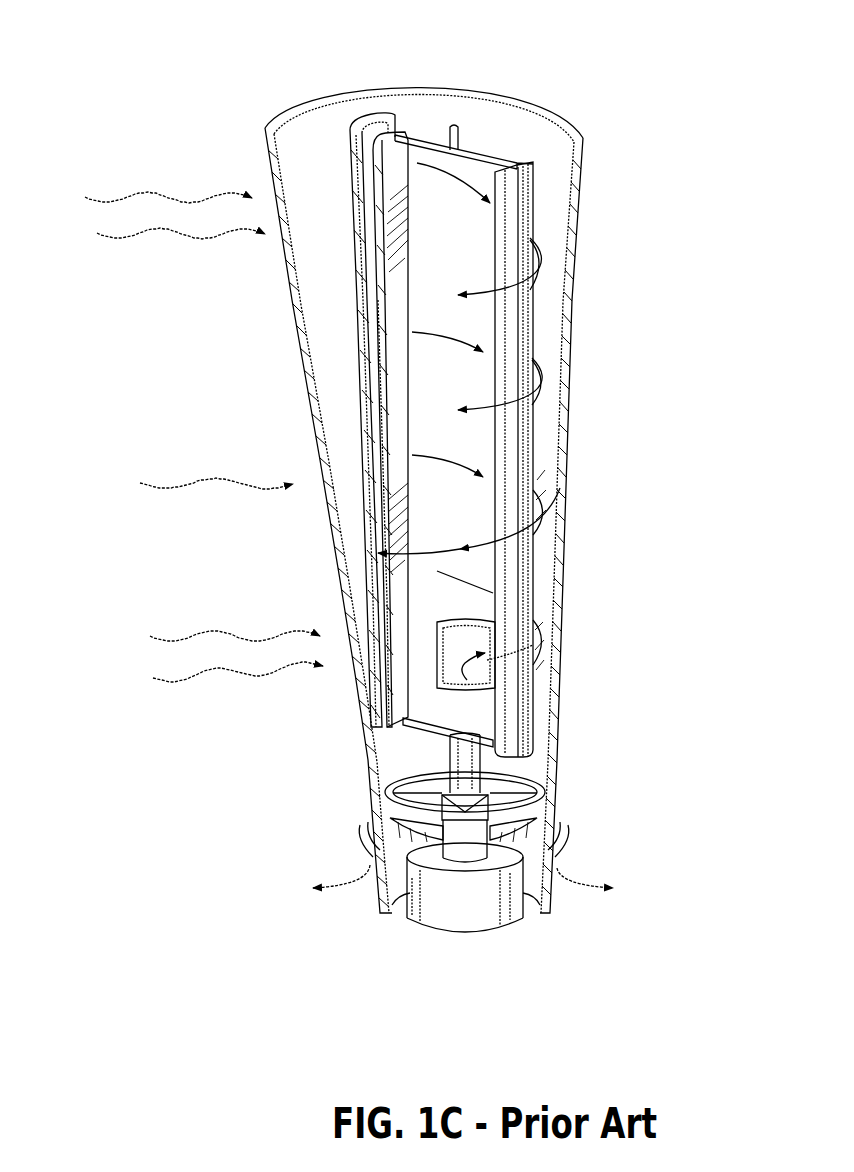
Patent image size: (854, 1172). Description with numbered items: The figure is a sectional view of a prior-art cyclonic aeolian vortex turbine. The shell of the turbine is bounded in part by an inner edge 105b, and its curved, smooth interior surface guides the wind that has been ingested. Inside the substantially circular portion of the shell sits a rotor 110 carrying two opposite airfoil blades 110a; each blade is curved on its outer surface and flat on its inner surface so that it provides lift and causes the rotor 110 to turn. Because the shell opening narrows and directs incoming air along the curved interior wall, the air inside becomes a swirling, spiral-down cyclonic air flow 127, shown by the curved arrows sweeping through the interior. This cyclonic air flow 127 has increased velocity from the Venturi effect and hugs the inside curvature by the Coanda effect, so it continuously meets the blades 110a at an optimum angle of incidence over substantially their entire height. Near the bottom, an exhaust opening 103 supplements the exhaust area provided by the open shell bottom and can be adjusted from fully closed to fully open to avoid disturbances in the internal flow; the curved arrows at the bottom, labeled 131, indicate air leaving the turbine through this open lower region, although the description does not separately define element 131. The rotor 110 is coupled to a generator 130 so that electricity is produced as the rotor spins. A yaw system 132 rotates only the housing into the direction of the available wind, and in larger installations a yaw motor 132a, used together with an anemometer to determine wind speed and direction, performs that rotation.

The exhaust opening 103 is at (455, 650).
The inner edge 105b is at (398, 113).
The rotor 110 is at (502, 152).
The airfoil blades 110a is at (393, 362).
The cyclonic air flow 127 is at (540, 512).
The generator 130 is at (443, 932).
The exhaust flow 131 is at (558, 847).
The yaw system 132 is at (523, 772).
The yaw motor 132a is at (463, 840).